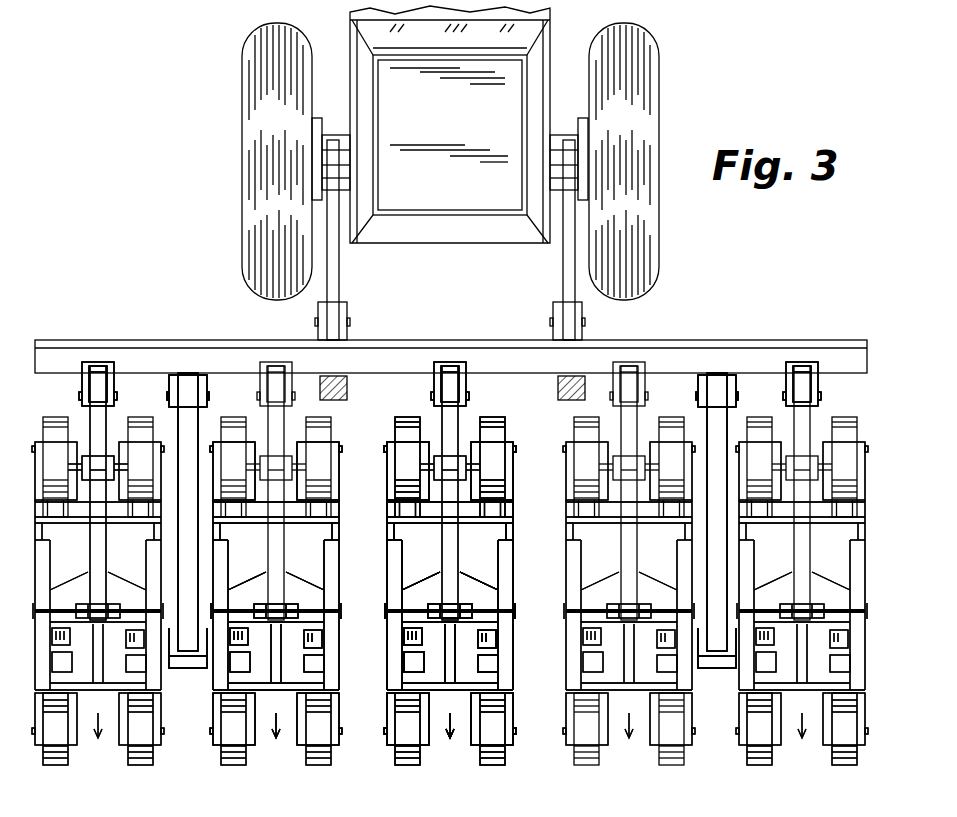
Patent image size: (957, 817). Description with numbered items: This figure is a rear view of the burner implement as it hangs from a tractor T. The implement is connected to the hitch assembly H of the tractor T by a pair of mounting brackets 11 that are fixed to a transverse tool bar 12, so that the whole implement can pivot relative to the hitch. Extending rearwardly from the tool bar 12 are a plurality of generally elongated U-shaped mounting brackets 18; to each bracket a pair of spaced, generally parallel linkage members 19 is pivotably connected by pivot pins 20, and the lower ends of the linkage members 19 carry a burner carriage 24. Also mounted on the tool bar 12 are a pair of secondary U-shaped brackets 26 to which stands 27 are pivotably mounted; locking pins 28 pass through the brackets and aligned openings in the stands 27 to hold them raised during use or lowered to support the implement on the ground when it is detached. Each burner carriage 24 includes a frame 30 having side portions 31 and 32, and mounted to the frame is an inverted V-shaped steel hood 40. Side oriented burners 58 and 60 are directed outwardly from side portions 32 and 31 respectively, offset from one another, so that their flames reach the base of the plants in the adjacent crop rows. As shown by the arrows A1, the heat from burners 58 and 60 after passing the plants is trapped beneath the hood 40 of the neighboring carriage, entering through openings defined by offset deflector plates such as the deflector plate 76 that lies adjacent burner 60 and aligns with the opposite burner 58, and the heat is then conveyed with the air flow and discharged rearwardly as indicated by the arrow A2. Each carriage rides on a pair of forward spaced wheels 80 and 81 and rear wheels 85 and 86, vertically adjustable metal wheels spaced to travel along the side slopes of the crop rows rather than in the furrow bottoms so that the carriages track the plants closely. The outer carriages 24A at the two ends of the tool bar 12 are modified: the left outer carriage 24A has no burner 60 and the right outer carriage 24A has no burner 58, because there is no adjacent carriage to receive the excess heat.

The tractor T is at (455, 131).
The hitch assembly H is at (340, 272).
The mounting brackets 11 is at (348, 312).
The tool bar 12 is at (785, 340).
The U-shaped mounting brackets 18 is at (98, 364).
The linkage members 19 is at (99, 392).
The pivot pins 20 is at (80, 398).
The secondary U-shaped brackets 26 is at (186, 378).
The stands 27 is at (194, 634).
The locking pins 28 is at (208, 392).
The frame 30 is at (548, 482).
The side portion 31 is at (388, 548).
The side portion 32 is at (512, 545).
The side oriented burner 58 is at (338, 610).
The side oriented burner 60 is at (246, 660).
The deflector plate 76 is at (496, 666).
The forward wheel 80 is at (411, 388).
The forward wheel 81 is at (518, 392).
The rear wheel 85 is at (398, 766).
The rear wheel 86 is at (492, 768).
The hood 40 is at (642, 665).
The burner carriage 24 is at (296, 762).
The outer carriage 24A is at (80, 762).
The arrows A1 is at (735, 674).
The arrow A2 is at (454, 742).